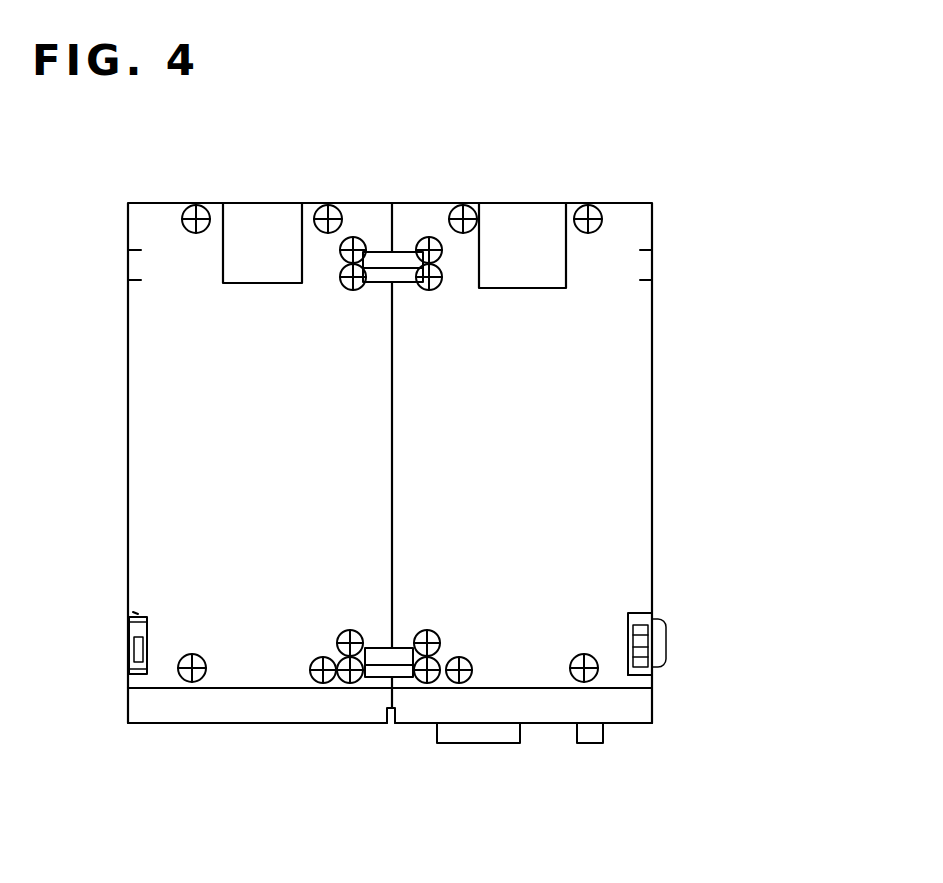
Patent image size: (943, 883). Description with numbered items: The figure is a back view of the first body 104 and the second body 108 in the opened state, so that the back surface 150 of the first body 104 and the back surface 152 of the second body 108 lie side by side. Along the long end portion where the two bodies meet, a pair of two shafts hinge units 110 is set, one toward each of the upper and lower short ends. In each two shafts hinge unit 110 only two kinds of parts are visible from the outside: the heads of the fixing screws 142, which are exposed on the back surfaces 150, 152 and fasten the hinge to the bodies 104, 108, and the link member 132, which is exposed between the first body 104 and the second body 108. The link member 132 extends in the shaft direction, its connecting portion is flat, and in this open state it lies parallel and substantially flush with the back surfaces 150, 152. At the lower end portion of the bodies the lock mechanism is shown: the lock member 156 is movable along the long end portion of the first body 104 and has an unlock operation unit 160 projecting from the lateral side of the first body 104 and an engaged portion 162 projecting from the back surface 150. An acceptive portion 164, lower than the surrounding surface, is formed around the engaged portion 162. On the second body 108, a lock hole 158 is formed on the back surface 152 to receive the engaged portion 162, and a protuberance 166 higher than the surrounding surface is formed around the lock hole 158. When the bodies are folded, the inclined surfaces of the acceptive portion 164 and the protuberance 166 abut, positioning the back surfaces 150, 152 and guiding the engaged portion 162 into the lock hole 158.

The first body 104 is at (640, 358).
The second body 108 is at (165, 277).
The two shafts hinge unit 110 is at (410, 296).
The link member 132 is at (392, 270).
The fixing screw 142 is at (358, 264).
The back surface 150 is at (567, 415).
The back surface 152 is at (230, 432).
The lock member 156 is at (655, 668).
The lock hole 158 is at (130, 637).
The unlock operation unit 160 is at (663, 628).
The engaged portion 162 is at (628, 637).
The acceptive portion 164 is at (638, 675).
The protuberance 166 is at (138, 613).